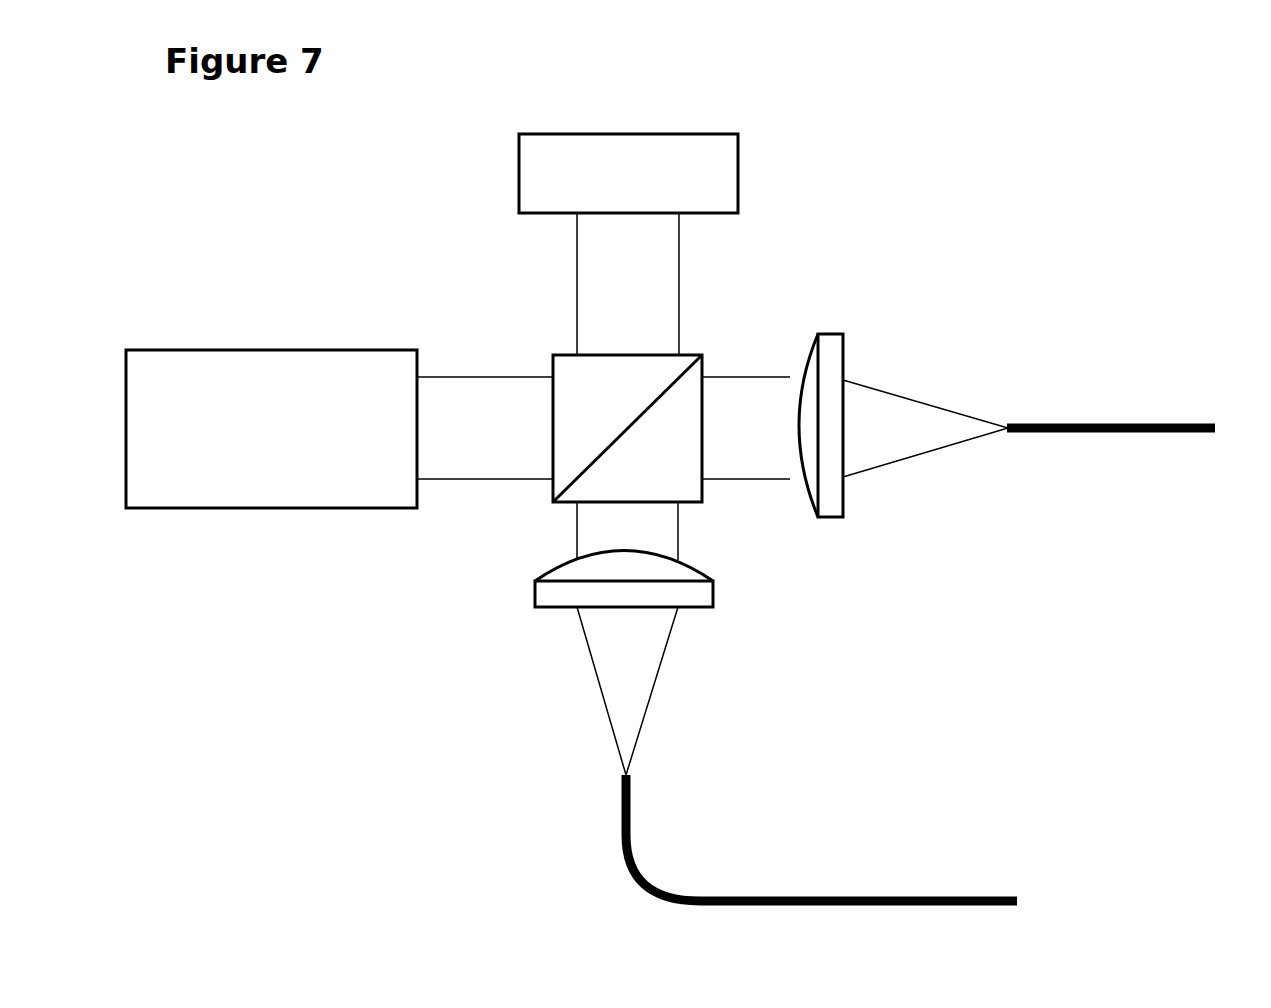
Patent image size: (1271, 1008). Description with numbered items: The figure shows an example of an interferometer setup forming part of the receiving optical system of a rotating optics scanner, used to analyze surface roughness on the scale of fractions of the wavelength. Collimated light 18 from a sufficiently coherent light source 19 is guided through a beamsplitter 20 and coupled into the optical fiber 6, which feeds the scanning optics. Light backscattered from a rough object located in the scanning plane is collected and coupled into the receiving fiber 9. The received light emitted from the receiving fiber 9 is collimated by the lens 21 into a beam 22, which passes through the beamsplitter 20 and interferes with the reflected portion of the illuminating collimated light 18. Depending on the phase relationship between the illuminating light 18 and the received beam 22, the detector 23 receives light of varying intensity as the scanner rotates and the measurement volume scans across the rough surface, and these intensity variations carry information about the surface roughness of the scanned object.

The optical fiber 6 is at (1052, 422).
The receiving fiber 9 is at (752, 892).
The collimated light 18 is at (496, 399).
The coherent light source 19 is at (153, 367).
The beamsplitter 20 is at (563, 486).
The lens 21 is at (685, 595).
The beam 22 is at (662, 527).
The detector 23 is at (716, 175).